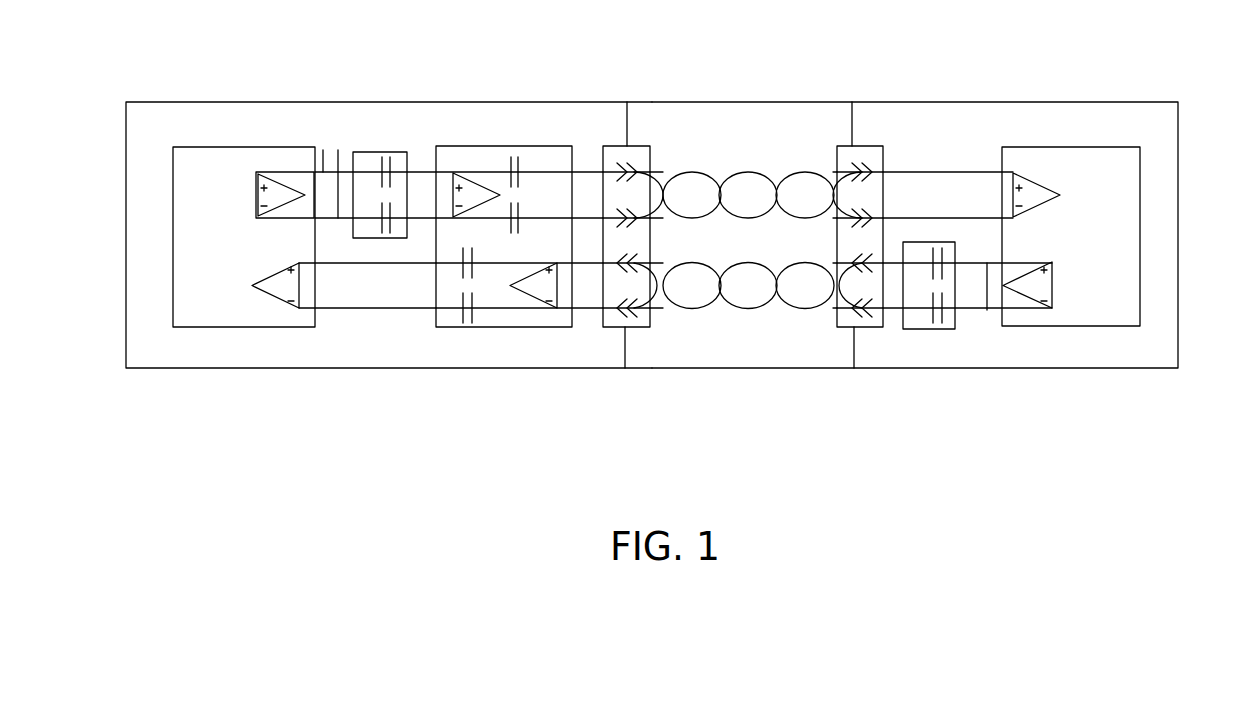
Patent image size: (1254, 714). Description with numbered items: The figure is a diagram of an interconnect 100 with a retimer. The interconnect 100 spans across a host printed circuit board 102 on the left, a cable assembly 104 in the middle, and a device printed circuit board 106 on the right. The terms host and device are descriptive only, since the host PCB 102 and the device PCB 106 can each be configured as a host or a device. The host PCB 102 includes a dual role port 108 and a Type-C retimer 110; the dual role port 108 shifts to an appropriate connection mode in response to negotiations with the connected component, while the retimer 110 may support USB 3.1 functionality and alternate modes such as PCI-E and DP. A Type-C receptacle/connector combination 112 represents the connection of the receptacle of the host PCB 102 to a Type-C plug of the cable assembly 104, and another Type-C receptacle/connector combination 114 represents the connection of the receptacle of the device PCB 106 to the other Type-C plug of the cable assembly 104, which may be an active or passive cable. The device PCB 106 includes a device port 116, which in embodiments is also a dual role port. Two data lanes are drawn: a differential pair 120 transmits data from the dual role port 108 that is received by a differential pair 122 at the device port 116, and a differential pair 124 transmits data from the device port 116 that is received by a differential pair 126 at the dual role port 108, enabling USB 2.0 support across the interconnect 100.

The interconnect 100 is at (687, 506).
The host printed circuit board 102 is at (175, 102).
The cable assembly 104 is at (722, 102).
The device printed circuit board 106 is at (1031, 102).
The dual role port 108 is at (173, 175).
The retimer 110 is at (483, 146).
The Type-C receptacle/connector combination 112 is at (617, 146).
The Type-C receptacle/connector combination 114 is at (860, 146).
The device port 116 is at (1140, 173).
The differential pair 120 is at (338, 218).
The differential pair 122 is at (952, 218).
The differential pair 124 is at (987, 263).
The differential pair 126 is at (372, 262).